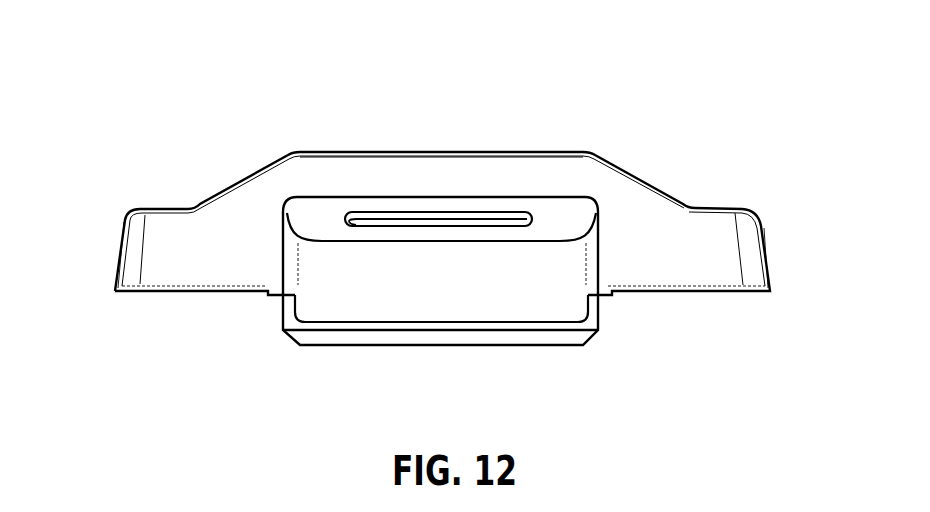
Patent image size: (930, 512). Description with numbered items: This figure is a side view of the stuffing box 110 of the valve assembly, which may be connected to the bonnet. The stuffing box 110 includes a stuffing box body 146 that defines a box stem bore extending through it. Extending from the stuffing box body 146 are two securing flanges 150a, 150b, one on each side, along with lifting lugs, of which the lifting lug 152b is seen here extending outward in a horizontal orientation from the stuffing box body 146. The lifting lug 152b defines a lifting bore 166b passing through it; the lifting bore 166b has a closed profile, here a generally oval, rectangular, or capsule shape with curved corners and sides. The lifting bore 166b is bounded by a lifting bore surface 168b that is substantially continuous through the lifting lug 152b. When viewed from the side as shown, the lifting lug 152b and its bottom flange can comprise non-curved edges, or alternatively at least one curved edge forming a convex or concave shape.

The stuffing box 110 is at (700, 70).
The stuffing box body 146 is at (297, 152).
The securing flange 150a is at (148, 217).
The securing flange 150b is at (730, 209).
The lifting lug 152b is at (566, 299).
The lifting bore 166b is at (505, 228).
The lifting bore surface 168b is at (450, 224).